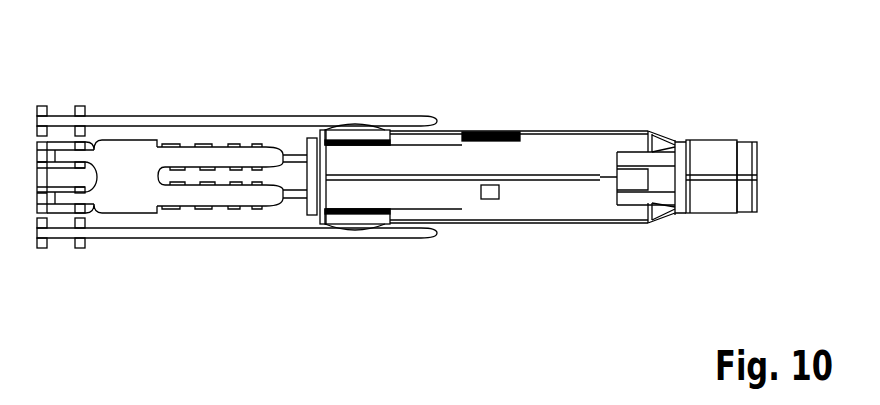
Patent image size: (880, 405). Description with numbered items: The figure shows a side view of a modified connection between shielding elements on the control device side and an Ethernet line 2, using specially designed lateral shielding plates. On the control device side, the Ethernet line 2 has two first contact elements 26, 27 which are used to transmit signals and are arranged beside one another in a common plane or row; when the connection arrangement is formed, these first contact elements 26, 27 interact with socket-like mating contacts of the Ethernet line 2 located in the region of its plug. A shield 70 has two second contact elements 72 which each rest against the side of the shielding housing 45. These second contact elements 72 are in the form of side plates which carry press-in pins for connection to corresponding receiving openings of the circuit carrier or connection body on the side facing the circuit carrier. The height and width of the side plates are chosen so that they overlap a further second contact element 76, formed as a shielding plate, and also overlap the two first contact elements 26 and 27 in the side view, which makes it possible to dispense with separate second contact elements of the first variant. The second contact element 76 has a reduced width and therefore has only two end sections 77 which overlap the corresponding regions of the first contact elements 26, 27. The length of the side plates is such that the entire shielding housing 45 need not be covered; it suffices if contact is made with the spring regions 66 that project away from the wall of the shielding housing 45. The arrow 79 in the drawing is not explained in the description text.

The Ethernet line 2 is at (778, 178).
The first contact element 26 is at (298, 197).
The first contact element 27 is at (298, 153).
The shielding housing 45 is at (538, 150).
The spring regions 66 is at (353, 125).
The shield 70 is at (381, 95).
The second contact elements 72 is at (197, 116).
The second contact element 76 is at (113, 197).
The end sections 77 is at (262, 197).
The contact element 79 is at (175, 253).